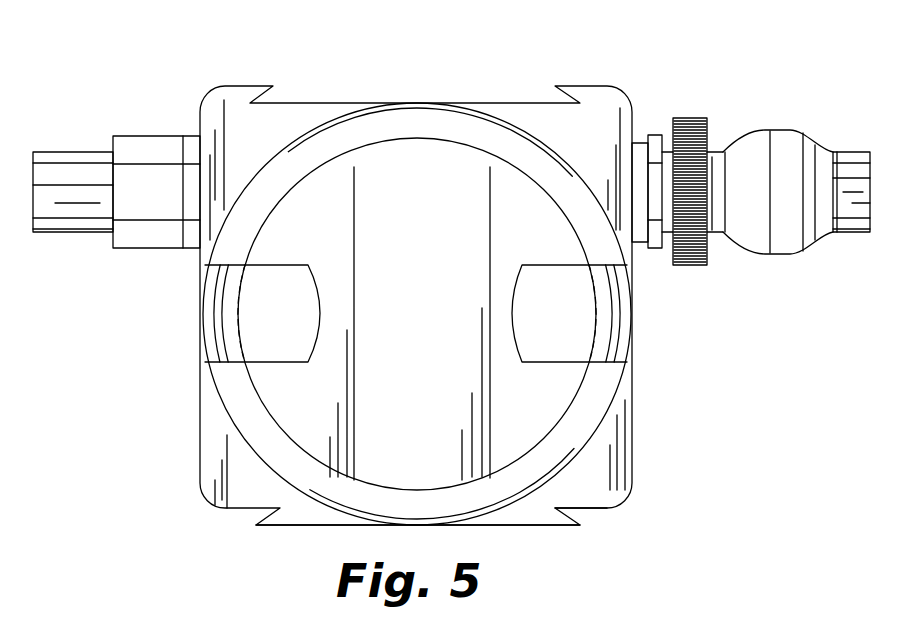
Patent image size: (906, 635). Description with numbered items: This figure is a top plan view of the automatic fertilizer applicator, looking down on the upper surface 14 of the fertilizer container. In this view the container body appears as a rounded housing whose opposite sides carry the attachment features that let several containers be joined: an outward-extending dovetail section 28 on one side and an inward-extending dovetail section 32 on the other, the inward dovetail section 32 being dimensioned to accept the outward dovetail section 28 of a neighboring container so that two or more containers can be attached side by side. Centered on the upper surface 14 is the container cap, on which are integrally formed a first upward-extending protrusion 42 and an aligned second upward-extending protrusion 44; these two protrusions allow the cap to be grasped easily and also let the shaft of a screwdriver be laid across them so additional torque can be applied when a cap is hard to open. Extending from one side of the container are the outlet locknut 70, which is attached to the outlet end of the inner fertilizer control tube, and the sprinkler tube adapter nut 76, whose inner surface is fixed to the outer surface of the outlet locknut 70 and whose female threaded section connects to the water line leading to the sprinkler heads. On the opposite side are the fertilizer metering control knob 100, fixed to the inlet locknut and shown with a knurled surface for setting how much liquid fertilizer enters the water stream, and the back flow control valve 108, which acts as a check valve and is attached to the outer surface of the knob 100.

The upper surface 14 is at (595, 482).
The outward-extending dovetail section 28 is at (585, 523).
The inward-extending dovetail section 32 is at (555, 97).
The first upward-extending protrusion 42 is at (620, 302).
The second upward-extending protrusion 44 is at (215, 308).
The outlet locknut 70 is at (188, 143).
The sprinkler tube adapter nut 76 is at (152, 155).
The fertilizer metering control knob 100 is at (697, 117).
The back flow control valve 108 is at (775, 147).